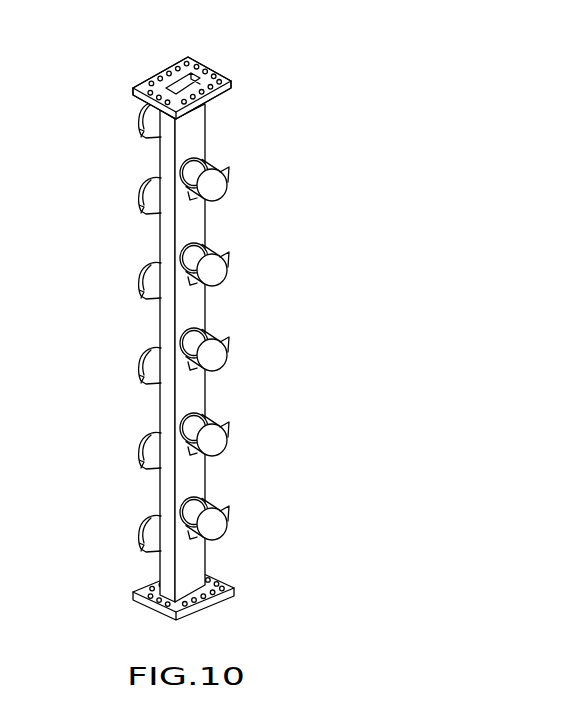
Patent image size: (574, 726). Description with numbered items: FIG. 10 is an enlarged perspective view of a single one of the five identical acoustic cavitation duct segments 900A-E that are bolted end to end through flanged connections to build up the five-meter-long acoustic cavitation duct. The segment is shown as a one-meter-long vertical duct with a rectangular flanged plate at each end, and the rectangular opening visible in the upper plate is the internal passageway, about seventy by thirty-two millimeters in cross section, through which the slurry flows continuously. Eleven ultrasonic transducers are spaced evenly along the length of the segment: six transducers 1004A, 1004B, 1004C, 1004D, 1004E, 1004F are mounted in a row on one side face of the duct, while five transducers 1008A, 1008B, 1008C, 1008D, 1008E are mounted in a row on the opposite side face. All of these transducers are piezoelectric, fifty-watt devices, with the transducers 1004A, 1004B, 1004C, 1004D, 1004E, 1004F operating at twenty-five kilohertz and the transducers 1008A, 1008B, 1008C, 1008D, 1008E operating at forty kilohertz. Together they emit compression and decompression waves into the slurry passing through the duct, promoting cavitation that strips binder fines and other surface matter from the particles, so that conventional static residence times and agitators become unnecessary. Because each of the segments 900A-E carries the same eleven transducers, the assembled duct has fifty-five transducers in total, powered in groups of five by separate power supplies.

The acoustic cavitation duct segments 900A-E is at (274, 233).
The ultrasonic transducer 1004A is at (133, 529).
The ultrasonic transducer 1004B is at (133, 447).
The ultrasonic transducer 1004C is at (133, 362).
The ultrasonic transducer 1004D is at (133, 277).
The ultrasonic transducer 1004E is at (133, 192).
The ultrasonic transducer 1004F is at (133, 110).
The ultrasonic transducer 1008A is at (230, 531).
The ultrasonic transducer 1008B is at (230, 447).
The ultrasonic transducer 1008C is at (230, 362).
The ultrasonic transducer 1008D is at (230, 277).
The ultrasonic transducer 1008E is at (230, 192).